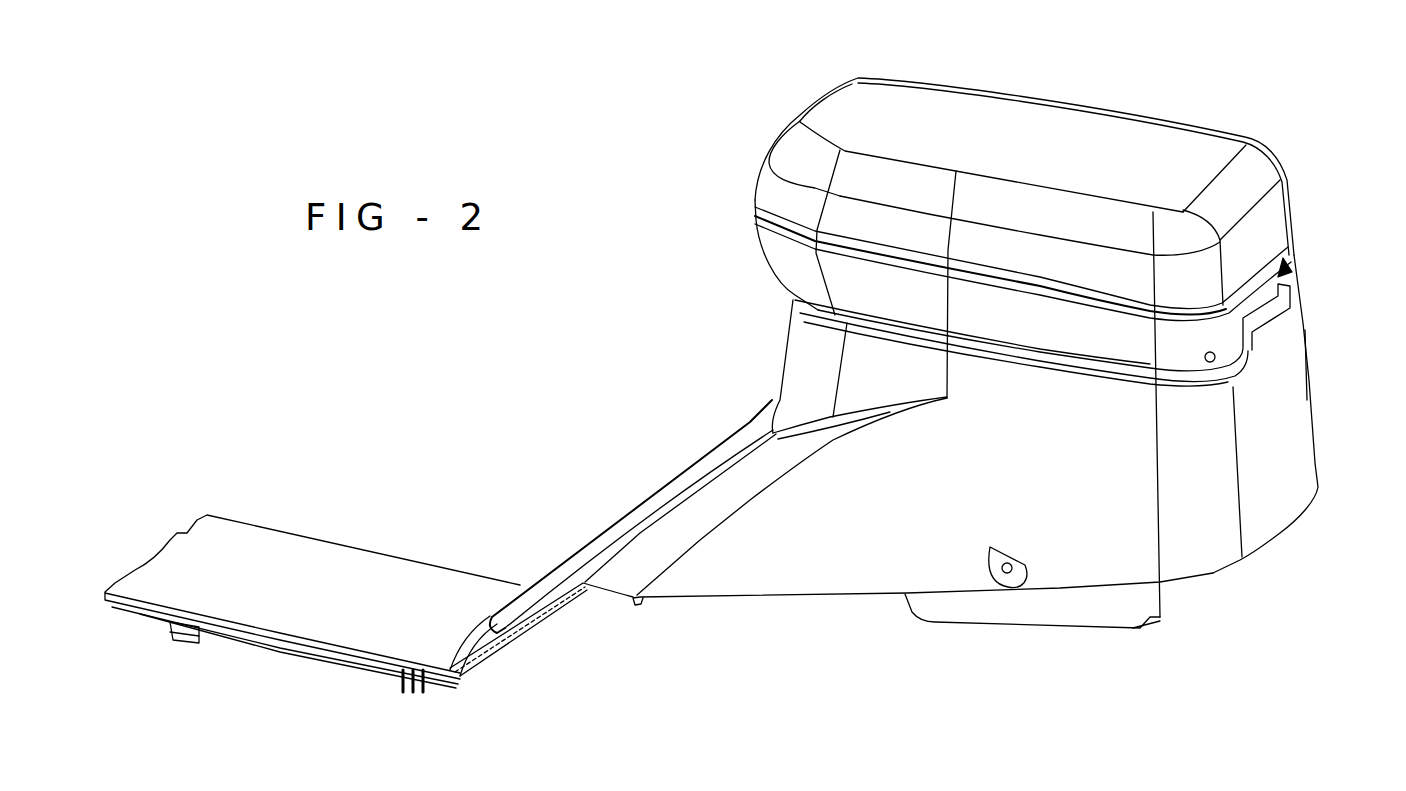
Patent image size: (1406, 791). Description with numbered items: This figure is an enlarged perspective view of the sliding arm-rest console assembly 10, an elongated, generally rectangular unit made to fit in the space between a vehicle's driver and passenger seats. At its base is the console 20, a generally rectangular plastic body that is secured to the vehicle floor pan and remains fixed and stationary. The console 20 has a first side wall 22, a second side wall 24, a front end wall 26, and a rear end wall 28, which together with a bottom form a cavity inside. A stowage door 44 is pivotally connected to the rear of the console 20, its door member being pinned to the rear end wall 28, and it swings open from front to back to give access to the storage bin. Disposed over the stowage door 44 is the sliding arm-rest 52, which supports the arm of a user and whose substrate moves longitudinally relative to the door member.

The sliding arm-rest console assembly 10 is at (1097, 92).
The sliding arm-rest 52 is at (821, 99).
The stowage door 44 is at (1295, 256).
The second side wall 24 is at (1300, 328).
The console 20 is at (1280, 380).
The rear end wall 28 is at (1290, 480).
The first side wall 22 is at (900, 557).
The front end wall 26 is at (790, 342).